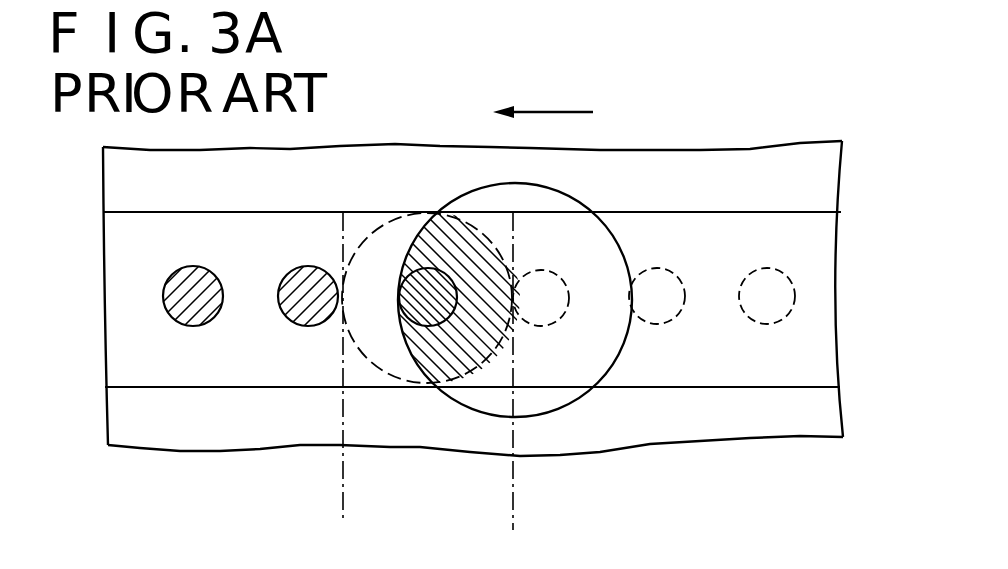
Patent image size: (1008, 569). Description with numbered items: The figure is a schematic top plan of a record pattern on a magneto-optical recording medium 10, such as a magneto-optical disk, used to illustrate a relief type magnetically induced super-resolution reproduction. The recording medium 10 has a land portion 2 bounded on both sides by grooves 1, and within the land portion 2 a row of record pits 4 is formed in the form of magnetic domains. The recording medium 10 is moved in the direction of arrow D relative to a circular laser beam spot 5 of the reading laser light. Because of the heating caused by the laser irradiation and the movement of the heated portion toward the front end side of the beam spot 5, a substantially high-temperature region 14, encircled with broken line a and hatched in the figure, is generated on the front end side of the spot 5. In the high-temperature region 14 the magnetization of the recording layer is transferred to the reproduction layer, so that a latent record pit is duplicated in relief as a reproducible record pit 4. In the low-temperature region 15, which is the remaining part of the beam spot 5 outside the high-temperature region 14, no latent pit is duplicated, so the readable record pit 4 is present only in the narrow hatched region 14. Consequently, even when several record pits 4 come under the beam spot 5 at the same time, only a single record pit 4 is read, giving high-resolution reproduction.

The grooves 1 is at (832, 178).
The land portion 2 is at (820, 294).
The record pits 4 is at (420, 313).
The laser beam spot 5 is at (572, 190).
The magneto-optical recording medium 10 is at (394, 148).
The high-temperature region 14 is at (475, 343).
The low-temperature region 15 is at (563, 361).
The broken line a is at (501, 261).
The direction of movement D is at (550, 112).